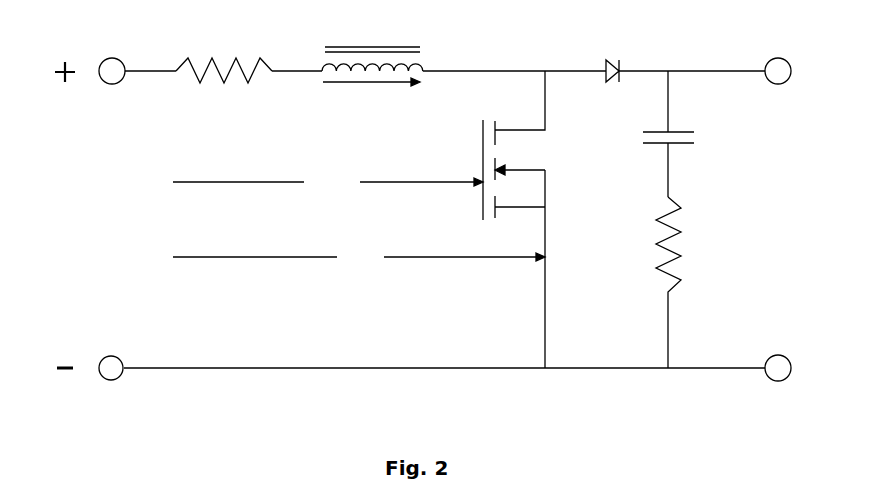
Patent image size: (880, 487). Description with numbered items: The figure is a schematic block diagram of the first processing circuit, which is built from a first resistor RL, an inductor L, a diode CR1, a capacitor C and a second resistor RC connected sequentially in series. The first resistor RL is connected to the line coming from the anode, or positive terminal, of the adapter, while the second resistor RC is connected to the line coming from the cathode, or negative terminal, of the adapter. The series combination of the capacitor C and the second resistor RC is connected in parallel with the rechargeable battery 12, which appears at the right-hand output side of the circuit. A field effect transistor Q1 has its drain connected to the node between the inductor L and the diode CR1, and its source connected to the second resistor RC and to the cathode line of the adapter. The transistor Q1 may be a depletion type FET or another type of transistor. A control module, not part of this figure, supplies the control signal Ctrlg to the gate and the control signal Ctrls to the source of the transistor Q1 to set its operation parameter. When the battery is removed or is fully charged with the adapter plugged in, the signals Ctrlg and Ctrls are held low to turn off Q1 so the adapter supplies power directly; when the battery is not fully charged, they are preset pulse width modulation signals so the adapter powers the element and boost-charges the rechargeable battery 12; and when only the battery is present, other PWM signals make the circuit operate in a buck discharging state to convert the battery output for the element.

The rechargeable battery 12 is at (704, 219).
The first resistor RL is at (224, 56).
The inductor L is at (372, 55).
The diode CR1 is at (609, 57).
The field effect transistor Q1 is at (517, 219).
The control signal Ctrlg is at (328, 182).
The control signal Ctrls is at (359, 257).
The capacitor C is at (659, 134).
The second resistor RC is at (654, 282).